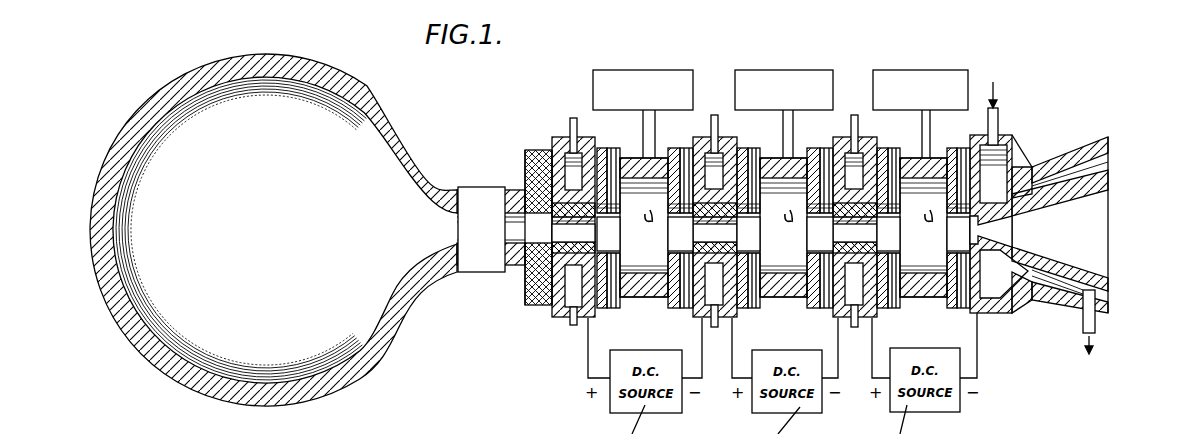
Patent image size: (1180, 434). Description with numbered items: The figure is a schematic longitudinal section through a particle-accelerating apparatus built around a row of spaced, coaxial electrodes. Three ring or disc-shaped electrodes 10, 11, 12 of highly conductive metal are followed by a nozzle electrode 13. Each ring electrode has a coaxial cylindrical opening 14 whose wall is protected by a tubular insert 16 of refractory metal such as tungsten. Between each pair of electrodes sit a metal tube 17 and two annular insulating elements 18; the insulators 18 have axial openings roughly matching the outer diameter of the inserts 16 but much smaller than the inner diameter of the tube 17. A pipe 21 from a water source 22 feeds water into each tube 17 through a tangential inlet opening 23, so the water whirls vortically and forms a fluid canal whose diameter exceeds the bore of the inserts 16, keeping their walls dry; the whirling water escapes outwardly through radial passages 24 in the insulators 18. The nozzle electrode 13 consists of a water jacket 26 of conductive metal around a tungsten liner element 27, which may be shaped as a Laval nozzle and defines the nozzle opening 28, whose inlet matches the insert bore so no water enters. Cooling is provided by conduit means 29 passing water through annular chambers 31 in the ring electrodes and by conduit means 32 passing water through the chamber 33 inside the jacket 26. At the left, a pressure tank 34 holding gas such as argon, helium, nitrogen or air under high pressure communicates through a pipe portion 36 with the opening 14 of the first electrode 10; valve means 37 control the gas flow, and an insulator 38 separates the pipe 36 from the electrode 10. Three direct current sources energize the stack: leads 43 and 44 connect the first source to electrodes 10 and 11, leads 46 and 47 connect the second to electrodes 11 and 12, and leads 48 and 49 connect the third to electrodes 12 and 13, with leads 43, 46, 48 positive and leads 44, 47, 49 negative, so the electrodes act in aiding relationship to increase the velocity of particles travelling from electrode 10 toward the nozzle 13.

The ring or disc-shaped electrode 10 is at (559, 207).
The ring or disc-shaped electrode 11 is at (732, 215).
The ring or disc-shaped electrode 12 is at (867, 215).
The nozzle electrode 13 is at (1060, 199).
The cylindrical opening 14 is at (748, 236).
The tubular insert 16 is at (783, 229).
The metal tube 17 is at (783, 244).
The annular element 18 is at (783, 266).
The pipe 21 is at (790, 134).
The water source 22 is at (780, 71).
The tangential inlet opening 23 is at (783, 208).
The radial passage 24 is at (784, 237).
The water jacket 26 is at (1060, 298).
The liner element 27 is at (1077, 278).
The nozzle opening 28 is at (1042, 207).
The conduit means 29 is at (701, 226).
The annular chamber 31 is at (734, 238).
The conduit means 32 is at (1067, 218).
The chamber 33 is at (1004, 299).
The pressure tank 34 is at (274, 220).
The pipe portion 36 is at (486, 255).
The valve means 37 is at (480, 212).
The insulator 38 is at (514, 208).
The lead 43 is at (569, 361).
The lead 44 is at (697, 376).
The lead 46 is at (754, 348).
The lead 47 is at (839, 375).
The lead 48 is at (924, 345).
The lead 49 is at (994, 257).